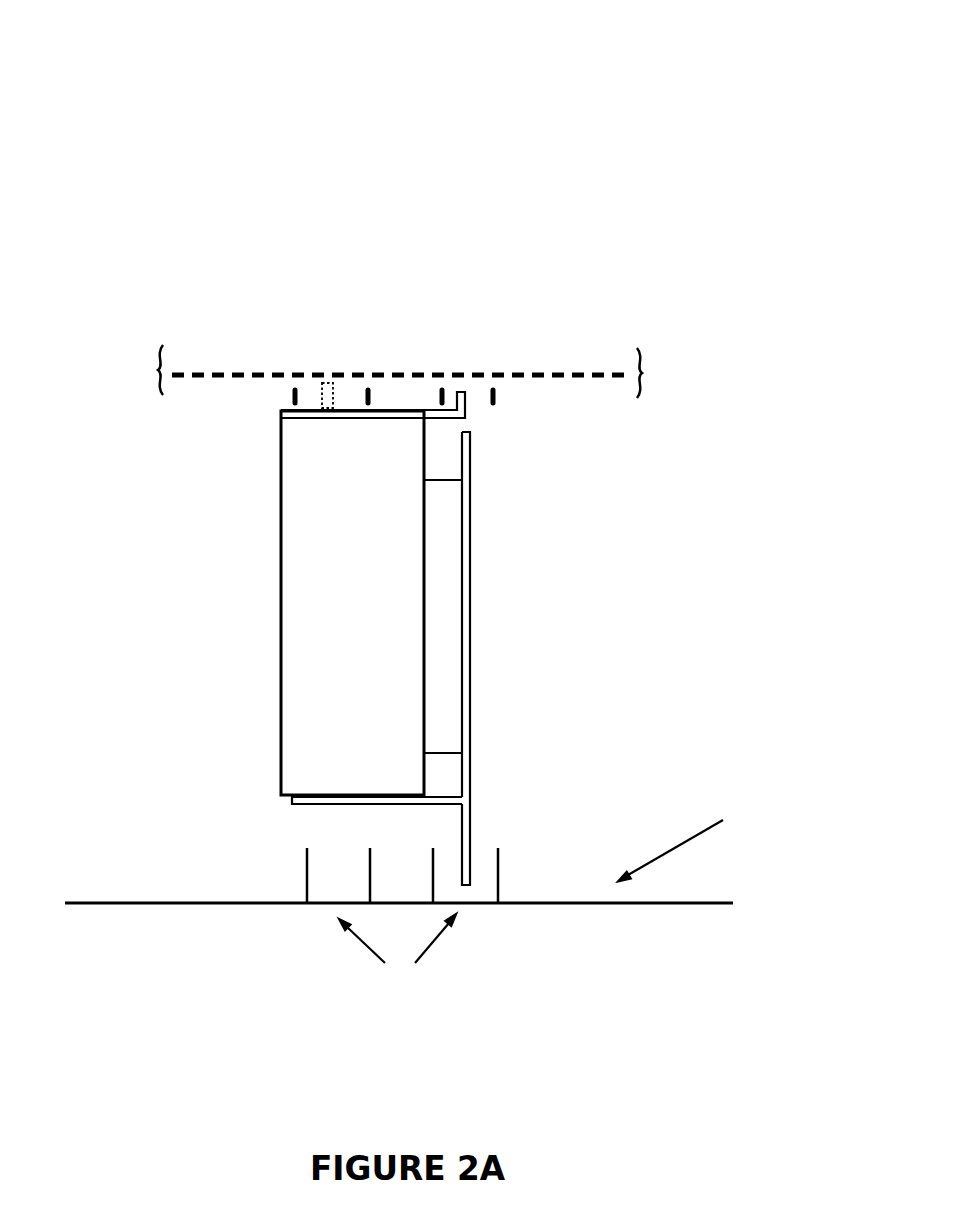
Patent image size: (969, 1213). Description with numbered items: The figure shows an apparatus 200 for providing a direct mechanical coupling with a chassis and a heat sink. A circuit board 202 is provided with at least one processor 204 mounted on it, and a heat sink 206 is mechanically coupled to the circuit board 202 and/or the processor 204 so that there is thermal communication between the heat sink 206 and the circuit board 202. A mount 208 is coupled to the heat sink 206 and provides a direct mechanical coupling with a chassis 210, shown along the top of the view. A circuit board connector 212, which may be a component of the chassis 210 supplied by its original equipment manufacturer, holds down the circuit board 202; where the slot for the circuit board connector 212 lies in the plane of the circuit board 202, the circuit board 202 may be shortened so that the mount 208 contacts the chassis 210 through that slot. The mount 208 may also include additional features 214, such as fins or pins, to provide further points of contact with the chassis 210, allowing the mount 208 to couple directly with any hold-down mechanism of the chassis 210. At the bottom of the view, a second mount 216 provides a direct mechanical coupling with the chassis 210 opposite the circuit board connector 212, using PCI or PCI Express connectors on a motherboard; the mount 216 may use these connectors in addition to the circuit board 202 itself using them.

The card retention system 200 is at (727, 92).
The circuit board 202 is at (470, 468).
The processor 204 is at (445, 542).
The heat sink 206 is at (280, 570).
The mount 208 is at (267, 412).
The chassis 210 is at (580, 375).
The circuit board connector 212 is at (424, 388).
The additional features 214 is at (315, 376).
The mount 216 is at (294, 812).